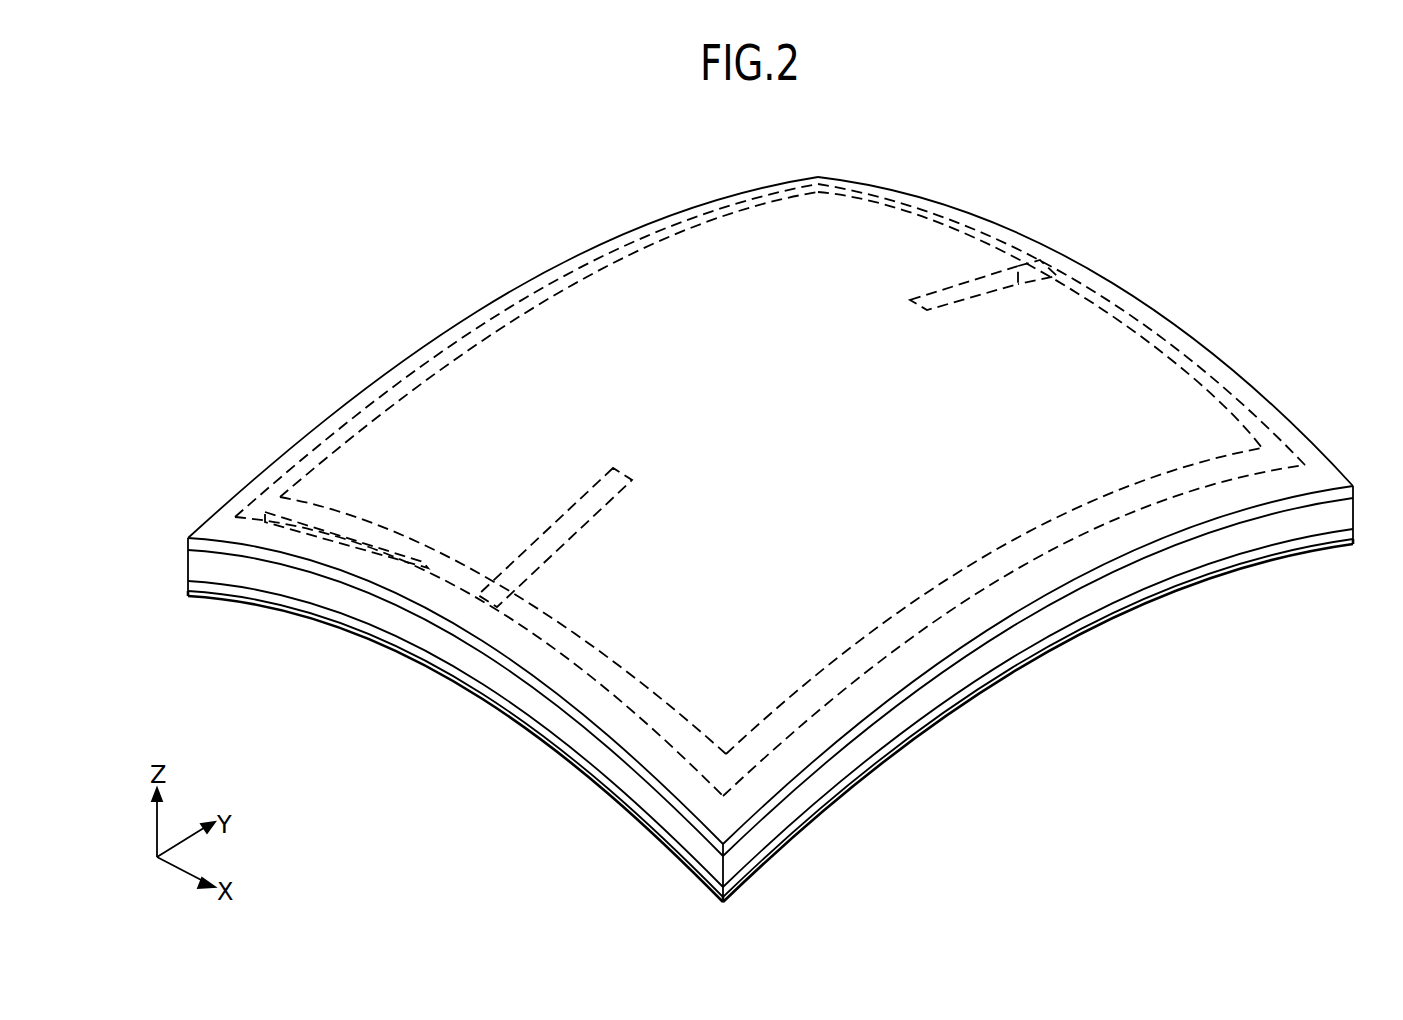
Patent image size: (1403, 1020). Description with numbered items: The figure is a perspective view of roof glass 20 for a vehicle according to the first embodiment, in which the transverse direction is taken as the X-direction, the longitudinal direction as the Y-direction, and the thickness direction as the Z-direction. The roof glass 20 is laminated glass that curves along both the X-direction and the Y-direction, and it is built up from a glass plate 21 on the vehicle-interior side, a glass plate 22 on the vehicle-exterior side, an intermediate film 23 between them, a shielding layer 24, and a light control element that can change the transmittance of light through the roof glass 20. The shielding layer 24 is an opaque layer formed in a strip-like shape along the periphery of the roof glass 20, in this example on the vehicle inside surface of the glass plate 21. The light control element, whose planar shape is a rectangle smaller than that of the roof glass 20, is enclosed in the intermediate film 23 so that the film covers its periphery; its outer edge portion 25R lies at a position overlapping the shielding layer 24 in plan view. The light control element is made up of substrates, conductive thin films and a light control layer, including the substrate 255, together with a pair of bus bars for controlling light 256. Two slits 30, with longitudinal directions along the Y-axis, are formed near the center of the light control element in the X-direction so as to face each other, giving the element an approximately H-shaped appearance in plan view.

The roof glass 20 is at (178, 193).
The glass plate 21 is at (963, 690).
The glass plate 22 is at (1042, 605).
The intermediate film 23 is at (1007, 648).
The shielding layer 24 is at (913, 732).
The outer edge portion 25R is at (1191, 360).
The substrate 255 is at (1098, 332).
The bus bars for controlling light 256 is at (387, 556).
The slits 30 is at (543, 555).